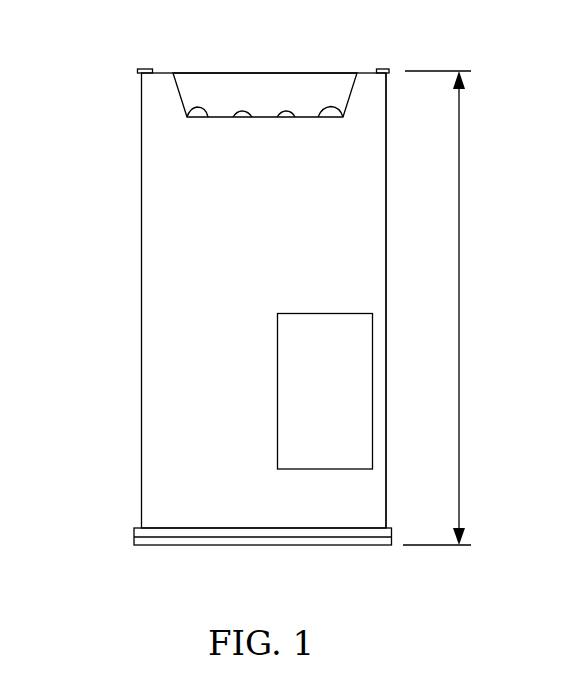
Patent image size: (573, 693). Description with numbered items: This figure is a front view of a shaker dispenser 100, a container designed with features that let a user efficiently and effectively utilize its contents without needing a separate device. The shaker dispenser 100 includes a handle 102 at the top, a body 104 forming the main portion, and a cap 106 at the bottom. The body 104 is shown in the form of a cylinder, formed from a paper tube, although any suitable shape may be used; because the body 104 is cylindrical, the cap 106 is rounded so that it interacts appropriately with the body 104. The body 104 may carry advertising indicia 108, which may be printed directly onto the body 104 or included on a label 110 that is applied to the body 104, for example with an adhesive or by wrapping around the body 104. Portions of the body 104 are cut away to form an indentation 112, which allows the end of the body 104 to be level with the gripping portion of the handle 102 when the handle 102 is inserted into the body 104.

The shaker dispenser 100 is at (112, 60).
The handle 102 is at (264, 92).
The body 104 is at (155, 334).
The cap 106 is at (158, 538).
The advertising indicia 108 is at (372, 172).
The label 110 is at (373, 411).
The indentation 112 is at (177, 95).